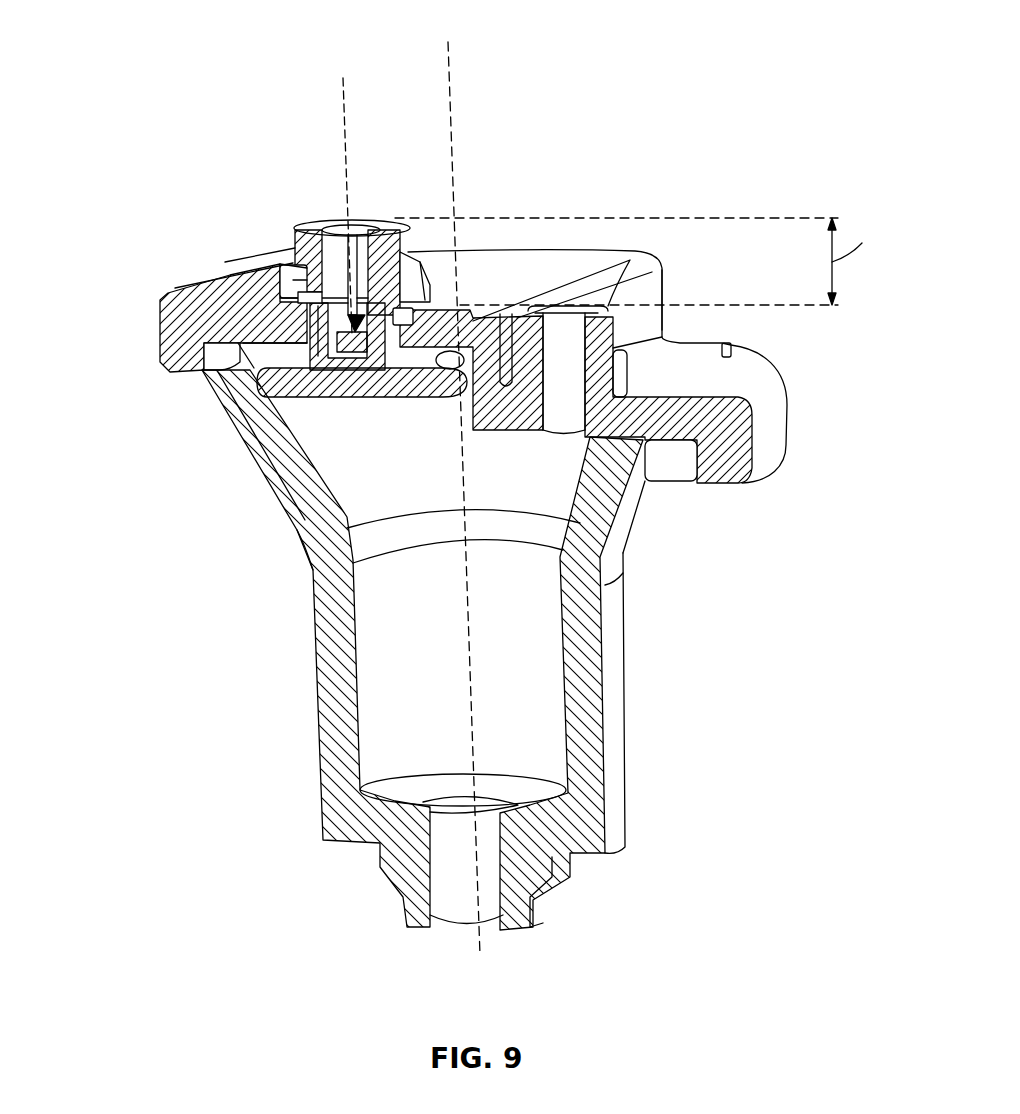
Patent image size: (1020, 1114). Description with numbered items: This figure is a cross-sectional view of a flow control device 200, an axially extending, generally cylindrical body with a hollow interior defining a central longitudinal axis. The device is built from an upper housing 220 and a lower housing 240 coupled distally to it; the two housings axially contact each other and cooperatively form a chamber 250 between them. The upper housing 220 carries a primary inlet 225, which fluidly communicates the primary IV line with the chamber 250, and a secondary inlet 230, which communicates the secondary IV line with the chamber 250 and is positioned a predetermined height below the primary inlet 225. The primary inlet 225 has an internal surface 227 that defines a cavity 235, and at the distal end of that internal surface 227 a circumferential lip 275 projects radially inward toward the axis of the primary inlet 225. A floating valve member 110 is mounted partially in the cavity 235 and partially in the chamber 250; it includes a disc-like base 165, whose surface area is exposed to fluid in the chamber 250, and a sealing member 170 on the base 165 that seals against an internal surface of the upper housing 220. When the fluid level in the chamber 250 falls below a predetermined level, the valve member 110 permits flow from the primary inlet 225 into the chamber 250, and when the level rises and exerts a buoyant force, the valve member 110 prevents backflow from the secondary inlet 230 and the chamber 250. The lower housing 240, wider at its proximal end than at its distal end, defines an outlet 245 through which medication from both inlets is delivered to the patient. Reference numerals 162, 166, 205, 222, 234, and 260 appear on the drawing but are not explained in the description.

The flow control device 200 is at (151, 126).
The valve member 110 is at (352, 401).
The pin 162 is at (352, 318).
The base 165 is at (230, 410).
The slot 166 is at (310, 305).
The sealing member 170 is at (260, 388).
The body 205 is at (740, 349).
The upper housing 220 is at (157, 350).
The lower surface 222 is at (297, 345).
The primary inlet 225 is at (365, 221).
The internal surface 227 is at (367, 385).
The secondary inlet 230 is at (622, 262).
The outer wall 234 is at (668, 273).
The cavity 235 is at (298, 312).
The lower housing 240 is at (303, 533).
The outlet 245 is at (403, 889).
The chamber 250 is at (387, 665).
The upper surface 260 is at (305, 298).
The circumferential lip 275 is at (308, 300).